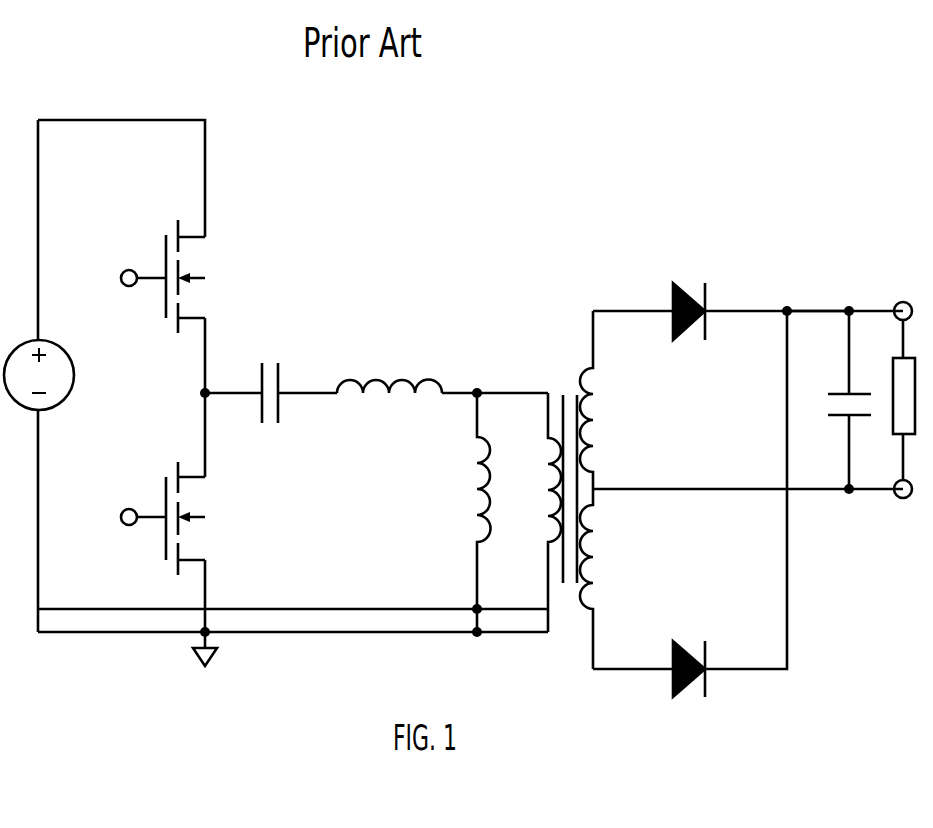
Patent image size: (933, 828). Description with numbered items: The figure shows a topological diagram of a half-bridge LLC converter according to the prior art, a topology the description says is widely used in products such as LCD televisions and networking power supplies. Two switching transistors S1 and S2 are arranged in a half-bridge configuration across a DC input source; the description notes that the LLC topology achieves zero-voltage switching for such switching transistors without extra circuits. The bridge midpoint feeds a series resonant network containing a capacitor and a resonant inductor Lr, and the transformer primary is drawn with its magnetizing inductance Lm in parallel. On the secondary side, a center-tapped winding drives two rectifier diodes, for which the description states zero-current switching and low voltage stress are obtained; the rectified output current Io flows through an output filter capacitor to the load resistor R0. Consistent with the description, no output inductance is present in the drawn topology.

The upper switch (MOSFET) S1 is at (163, 252).
The lower switch (MOSFET) S2 is at (163, 495).
The resonant inductor Lr is at (389, 374).
The magnetizing inductance Lm is at (466, 512).
The output current Io is at (818, 287).
The load resistor R0 is at (907, 432).